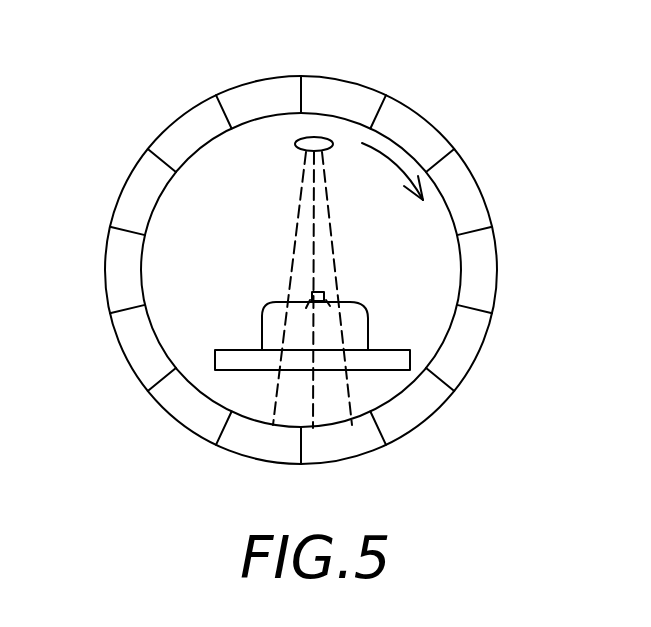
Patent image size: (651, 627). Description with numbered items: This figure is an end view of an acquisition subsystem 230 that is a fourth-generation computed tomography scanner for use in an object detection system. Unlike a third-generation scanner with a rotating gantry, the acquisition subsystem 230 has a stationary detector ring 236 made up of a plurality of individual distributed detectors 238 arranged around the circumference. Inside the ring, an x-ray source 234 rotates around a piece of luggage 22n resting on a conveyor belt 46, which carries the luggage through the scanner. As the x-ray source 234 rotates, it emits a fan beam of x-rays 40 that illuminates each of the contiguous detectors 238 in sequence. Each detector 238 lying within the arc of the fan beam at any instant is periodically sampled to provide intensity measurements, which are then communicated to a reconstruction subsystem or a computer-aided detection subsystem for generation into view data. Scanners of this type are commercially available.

The acquisition subsystem 230 is at (458, 95).
The x-ray source 234 is at (325, 148).
The stationary detector ring 236 is at (478, 182).
The distributed detectors 238 is at (413, 402).
The x-rays 40 is at (330, 222).
The piece of luggage 22n is at (315, 321).
The conveyor belt 46 is at (217, 355).